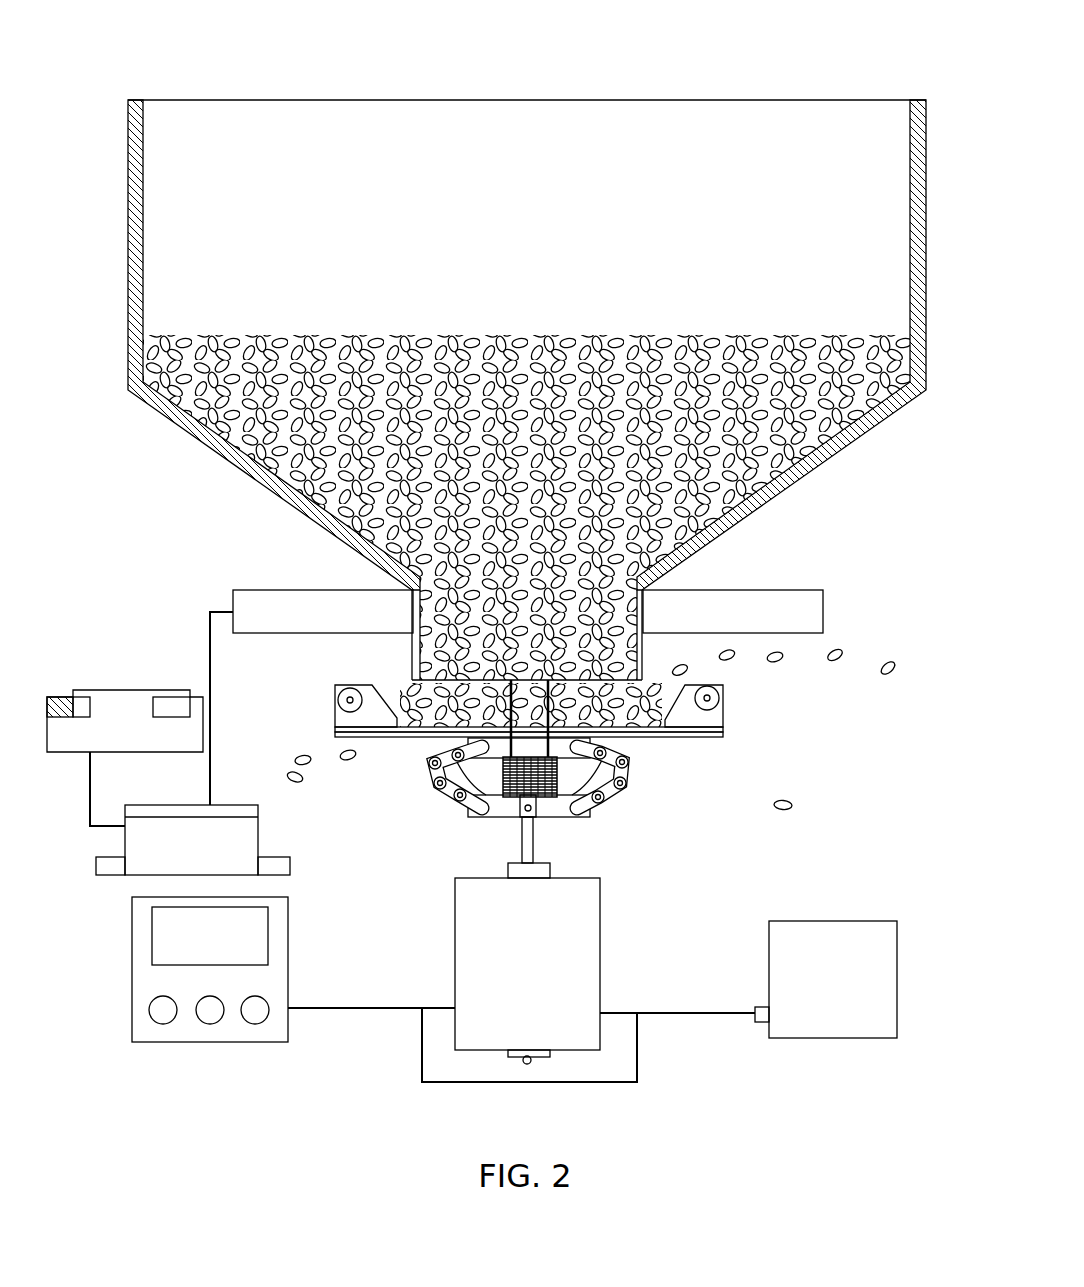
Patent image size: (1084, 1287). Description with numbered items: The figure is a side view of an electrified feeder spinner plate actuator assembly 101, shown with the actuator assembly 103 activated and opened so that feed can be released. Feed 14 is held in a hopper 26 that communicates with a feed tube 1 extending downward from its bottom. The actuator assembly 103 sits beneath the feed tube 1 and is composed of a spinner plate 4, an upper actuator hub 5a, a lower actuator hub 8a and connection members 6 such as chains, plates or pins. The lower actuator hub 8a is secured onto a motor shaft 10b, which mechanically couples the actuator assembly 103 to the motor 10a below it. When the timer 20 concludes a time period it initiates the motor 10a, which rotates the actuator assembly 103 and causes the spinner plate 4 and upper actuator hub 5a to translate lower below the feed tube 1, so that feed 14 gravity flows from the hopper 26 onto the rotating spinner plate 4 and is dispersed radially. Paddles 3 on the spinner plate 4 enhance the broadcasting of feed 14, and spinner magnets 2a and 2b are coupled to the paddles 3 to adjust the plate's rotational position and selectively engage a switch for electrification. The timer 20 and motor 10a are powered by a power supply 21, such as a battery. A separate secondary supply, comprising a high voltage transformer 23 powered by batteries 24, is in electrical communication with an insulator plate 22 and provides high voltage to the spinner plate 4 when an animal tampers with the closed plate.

The electrified feeder spinner plate actuator assembly 101 is at (265, 56).
The hopper 26 is at (646, 202).
The feed 14 is at (397, 334).
The insulator plate 22 is at (760, 628).
The feed tube 1 is at (403, 641).
The spinner magnet 2a is at (333, 700).
The spinner magnet 2b is at (727, 698).
The paddles 3 is at (330, 722).
The spinner plate 4 is at (727, 737).
The upper actuator hub 5a is at (603, 745).
The connection members 6 is at (424, 771).
The lower actuator hub 8a is at (596, 817).
The actuator assembly 103 is at (428, 827).
The motor 10a is at (580, 941).
The motor shaft 10b is at (540, 850).
The timer 20 is at (192, 950).
The power supply 21 is at (846, 997).
The high voltage transformer 23 is at (206, 863).
The batteries 24 is at (136, 737).